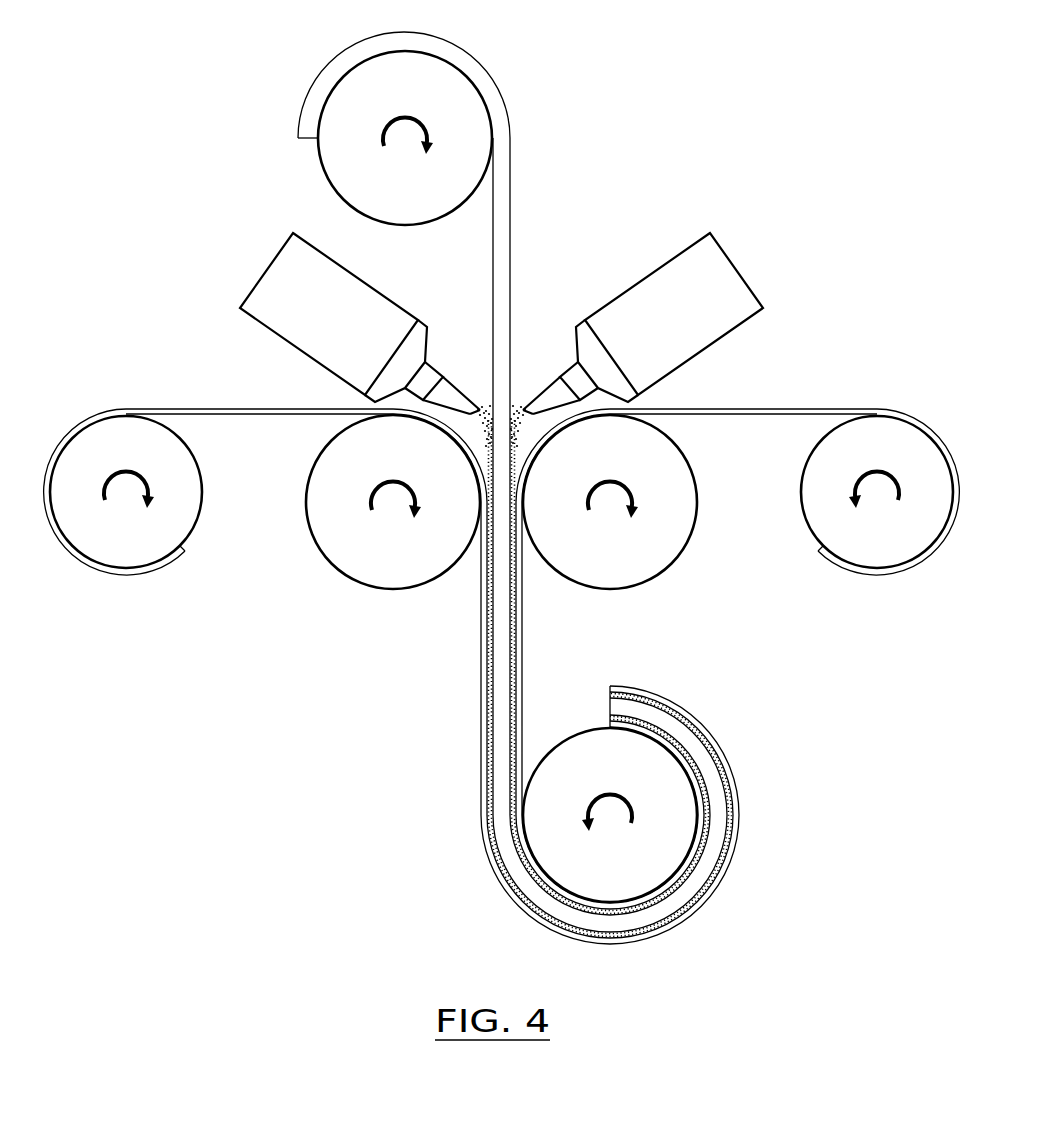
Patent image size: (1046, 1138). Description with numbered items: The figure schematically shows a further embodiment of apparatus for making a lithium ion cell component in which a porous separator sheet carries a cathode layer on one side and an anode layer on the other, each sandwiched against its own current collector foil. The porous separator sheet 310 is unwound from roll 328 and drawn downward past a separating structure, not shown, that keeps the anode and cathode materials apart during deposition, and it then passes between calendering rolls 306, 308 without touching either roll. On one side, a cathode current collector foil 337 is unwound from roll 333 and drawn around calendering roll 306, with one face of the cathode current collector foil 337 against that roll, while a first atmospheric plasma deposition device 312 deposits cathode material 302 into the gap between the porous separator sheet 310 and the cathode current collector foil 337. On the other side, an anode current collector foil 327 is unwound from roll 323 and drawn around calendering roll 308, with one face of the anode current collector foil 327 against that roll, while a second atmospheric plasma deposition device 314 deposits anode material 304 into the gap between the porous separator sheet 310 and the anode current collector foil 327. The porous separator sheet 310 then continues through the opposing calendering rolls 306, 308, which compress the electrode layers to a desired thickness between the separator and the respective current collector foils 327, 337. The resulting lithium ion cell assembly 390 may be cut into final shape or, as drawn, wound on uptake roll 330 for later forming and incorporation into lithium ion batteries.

The cathode material 302 is at (485, 412).
The anode material 304 is at (518, 412).
The calendering roll 306 is at (310, 458).
The calendering roll 308 is at (694, 458).
The porous separator sheet 310 is at (511, 132).
The first atmospheric plasma deposition device 312 is at (268, 262).
The second atmospheric plasma deposition device 314 is at (735, 262).
The roll 323 is at (810, 527).
The anode current collector foil 327 is at (818, 408).
The roll 328 is at (320, 165).
The uptake roll 330 is at (583, 730).
The roll 333 is at (193, 527).
The cathode current collector foil 337 is at (185, 408).
The lithium ion cell assembly 390 is at (491, 877).